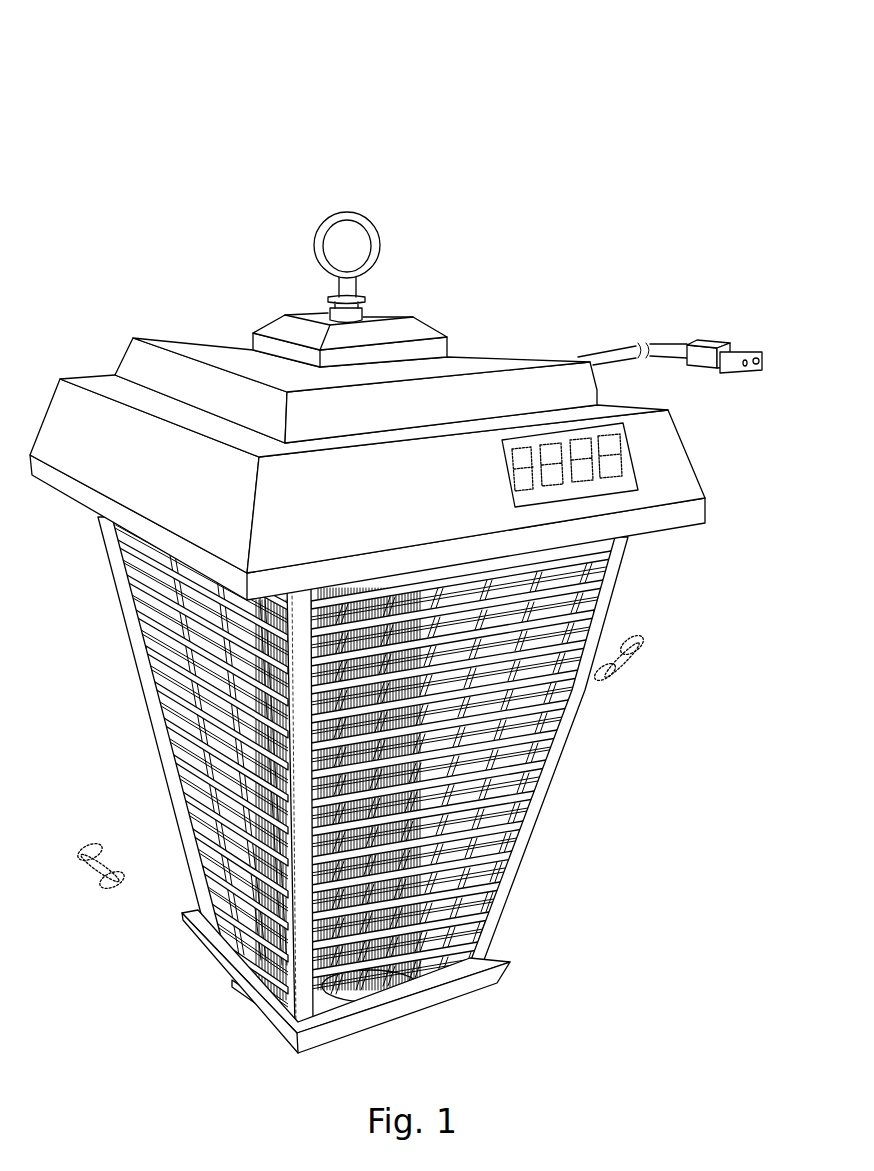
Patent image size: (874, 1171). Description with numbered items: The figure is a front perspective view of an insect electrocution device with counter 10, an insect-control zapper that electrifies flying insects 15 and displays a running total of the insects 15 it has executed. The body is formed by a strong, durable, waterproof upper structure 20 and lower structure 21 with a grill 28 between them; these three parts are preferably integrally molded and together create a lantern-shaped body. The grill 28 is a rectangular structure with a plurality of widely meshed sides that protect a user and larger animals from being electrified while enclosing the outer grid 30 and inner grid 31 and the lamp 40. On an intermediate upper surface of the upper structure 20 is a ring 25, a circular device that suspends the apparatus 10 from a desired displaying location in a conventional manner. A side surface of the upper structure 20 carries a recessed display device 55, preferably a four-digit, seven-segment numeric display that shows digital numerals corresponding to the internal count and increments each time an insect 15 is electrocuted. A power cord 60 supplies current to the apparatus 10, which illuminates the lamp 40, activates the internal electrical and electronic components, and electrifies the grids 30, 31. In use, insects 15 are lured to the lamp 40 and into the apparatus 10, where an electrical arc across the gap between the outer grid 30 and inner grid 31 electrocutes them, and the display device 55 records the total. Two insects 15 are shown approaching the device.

The insect electrocution device with counter 10 is at (98, 100).
The insect 15 is at (640, 642).
The upper structure 20 is at (102, 418).
The lower structure 21 is at (298, 1050).
The ring 25 is at (340, 212).
The grill 28 is at (487, 840).
The outer grid 30 is at (417, 985).
The inner grid 31 is at (487, 757).
The lamp 40 is at (605, 580).
The display device 55 is at (625, 485).
The power cord 60 is at (717, 350).